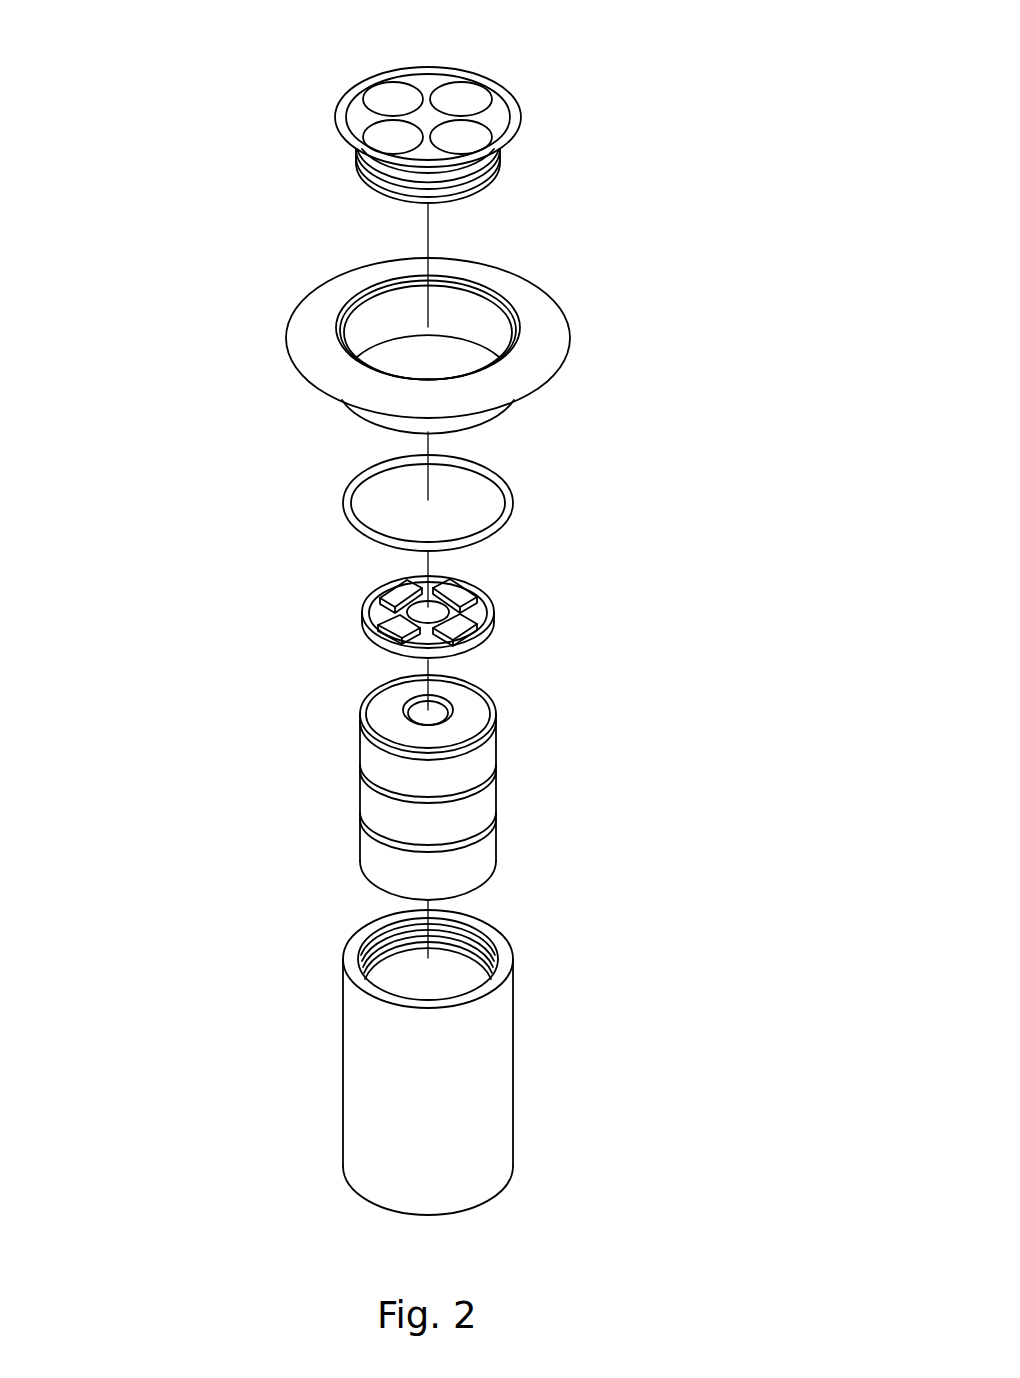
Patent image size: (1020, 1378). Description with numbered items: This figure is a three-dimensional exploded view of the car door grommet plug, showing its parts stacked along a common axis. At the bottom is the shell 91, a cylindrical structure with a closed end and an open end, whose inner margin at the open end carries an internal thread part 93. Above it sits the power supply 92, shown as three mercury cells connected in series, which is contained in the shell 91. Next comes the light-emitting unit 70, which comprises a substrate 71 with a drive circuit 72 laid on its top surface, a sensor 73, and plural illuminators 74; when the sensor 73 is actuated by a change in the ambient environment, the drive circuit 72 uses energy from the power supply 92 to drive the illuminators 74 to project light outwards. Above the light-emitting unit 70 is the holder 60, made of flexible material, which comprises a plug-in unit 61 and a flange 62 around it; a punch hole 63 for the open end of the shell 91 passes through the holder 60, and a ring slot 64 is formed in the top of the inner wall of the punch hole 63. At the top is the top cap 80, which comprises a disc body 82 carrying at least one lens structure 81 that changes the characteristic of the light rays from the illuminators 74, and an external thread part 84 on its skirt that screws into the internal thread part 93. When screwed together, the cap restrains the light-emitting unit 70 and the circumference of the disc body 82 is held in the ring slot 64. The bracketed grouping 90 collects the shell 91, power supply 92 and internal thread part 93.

The holder 60 is at (446, 324).
The plug-in unit 61 is at (450, 427).
The flange 62 is at (542, 362).
The punch hole 63 is at (483, 323).
The ring slot 64 is at (380, 290).
The light-emitting unit 70 is at (401, 607).
The substrate 71 is at (482, 634).
The drive circuit 72 is at (472, 610).
The sensor 73 is at (418, 617).
The illuminators 74 is at (457, 593).
The top cap 80 is at (429, 107).
The lens structure 81 is at (462, 102).
The disc body 82 is at (498, 120).
The external thread part 84 is at (380, 183).
The housing assembly 90 is at (296, 945).
The shell 91 is at (363, 1085).
The power supply 92 is at (370, 805).
The internal thread part 93 is at (375, 945).